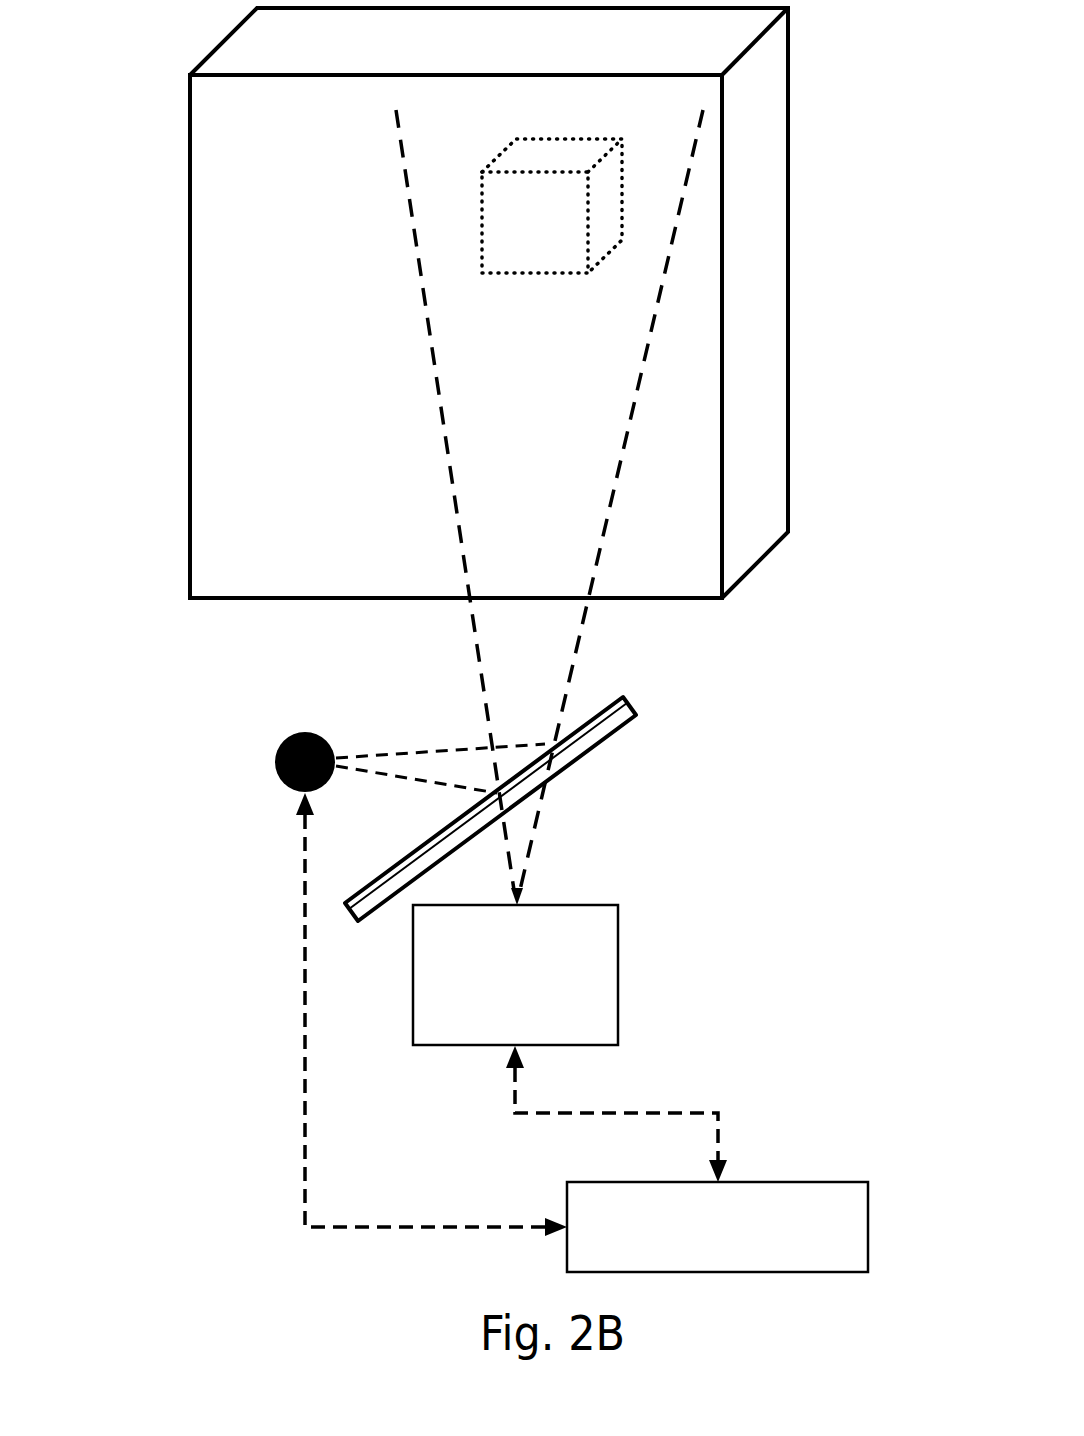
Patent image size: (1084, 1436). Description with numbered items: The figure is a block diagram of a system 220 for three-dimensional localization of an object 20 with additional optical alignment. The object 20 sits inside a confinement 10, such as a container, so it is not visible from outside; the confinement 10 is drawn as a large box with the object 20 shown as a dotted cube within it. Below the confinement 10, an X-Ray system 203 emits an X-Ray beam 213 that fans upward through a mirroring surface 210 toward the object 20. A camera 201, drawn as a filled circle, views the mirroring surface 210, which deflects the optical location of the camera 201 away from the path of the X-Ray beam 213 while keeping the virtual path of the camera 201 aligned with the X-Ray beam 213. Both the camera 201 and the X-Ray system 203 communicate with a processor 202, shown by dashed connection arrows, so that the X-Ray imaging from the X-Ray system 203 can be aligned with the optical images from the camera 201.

The confinement 10 is at (763, 287).
The object 20 is at (562, 248).
The X-Ray beam 213 is at (573, 665).
The mirroring surface 210 is at (593, 750).
The camera 201 is at (275, 758).
The X-Ray system 203 is at (620, 975).
The processor 202 is at (826, 1180).
The system 220 is at (218, 1132).